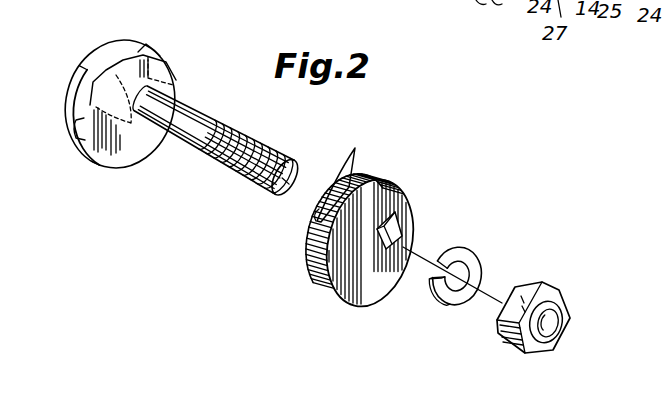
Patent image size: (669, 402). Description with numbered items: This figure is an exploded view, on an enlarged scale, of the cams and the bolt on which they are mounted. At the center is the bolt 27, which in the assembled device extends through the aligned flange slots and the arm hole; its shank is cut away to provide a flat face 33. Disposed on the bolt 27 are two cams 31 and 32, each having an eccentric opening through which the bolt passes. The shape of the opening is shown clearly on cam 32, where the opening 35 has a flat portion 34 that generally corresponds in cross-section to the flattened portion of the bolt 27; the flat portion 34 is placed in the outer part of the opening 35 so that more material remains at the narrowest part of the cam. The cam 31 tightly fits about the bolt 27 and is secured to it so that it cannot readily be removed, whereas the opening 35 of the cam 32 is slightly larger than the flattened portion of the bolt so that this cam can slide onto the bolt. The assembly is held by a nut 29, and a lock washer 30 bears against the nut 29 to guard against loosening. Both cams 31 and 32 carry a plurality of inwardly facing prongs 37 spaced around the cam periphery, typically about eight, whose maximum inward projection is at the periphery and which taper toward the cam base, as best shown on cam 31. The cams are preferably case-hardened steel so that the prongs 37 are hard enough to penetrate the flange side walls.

The bolt 27 is at (188, 111).
The nut 29 is at (558, 290).
The lock washer 30 is at (471, 257).
The cam 31 is at (95, 68).
The cam 32 is at (377, 184).
The flat face 33 is at (303, 198).
The flat portion 34 is at (400, 222).
The opening 35 is at (373, 248).
The prongs 37 is at (147, 48).